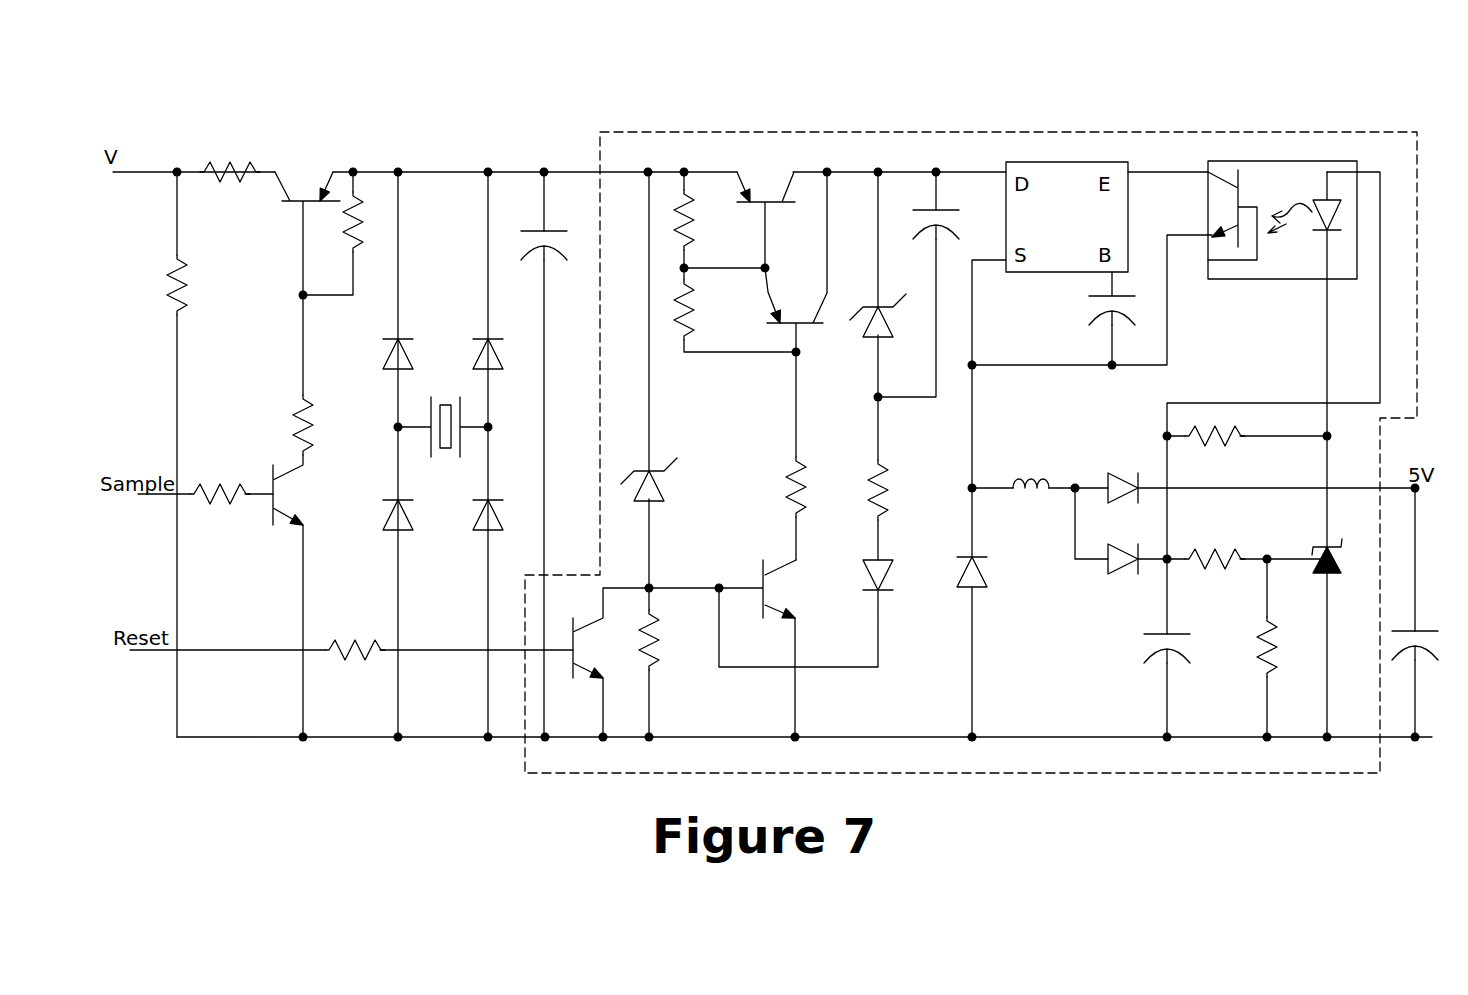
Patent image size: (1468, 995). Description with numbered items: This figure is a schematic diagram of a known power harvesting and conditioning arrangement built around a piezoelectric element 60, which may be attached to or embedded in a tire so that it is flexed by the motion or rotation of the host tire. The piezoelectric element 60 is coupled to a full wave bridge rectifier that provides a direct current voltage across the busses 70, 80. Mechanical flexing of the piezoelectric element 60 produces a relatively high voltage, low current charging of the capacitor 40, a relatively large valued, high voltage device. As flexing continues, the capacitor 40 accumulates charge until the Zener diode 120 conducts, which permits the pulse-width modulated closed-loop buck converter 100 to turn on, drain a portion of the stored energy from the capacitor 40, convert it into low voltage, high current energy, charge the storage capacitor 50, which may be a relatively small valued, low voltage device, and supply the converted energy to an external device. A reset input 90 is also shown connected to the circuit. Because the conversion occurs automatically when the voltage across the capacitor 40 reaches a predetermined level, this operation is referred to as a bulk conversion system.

The capacitor 40 is at (560, 231).
The storage capacitor 50 is at (1428, 632).
The piezoelectric element 60 is at (453, 397).
The bus 70 is at (372, 172).
The bus 80 is at (345, 740).
The reset input 90 is at (138, 650).
The pulse-width modulated closed-loop buck converter 100 is at (970, 773).
The Zener diode 120 is at (637, 499).